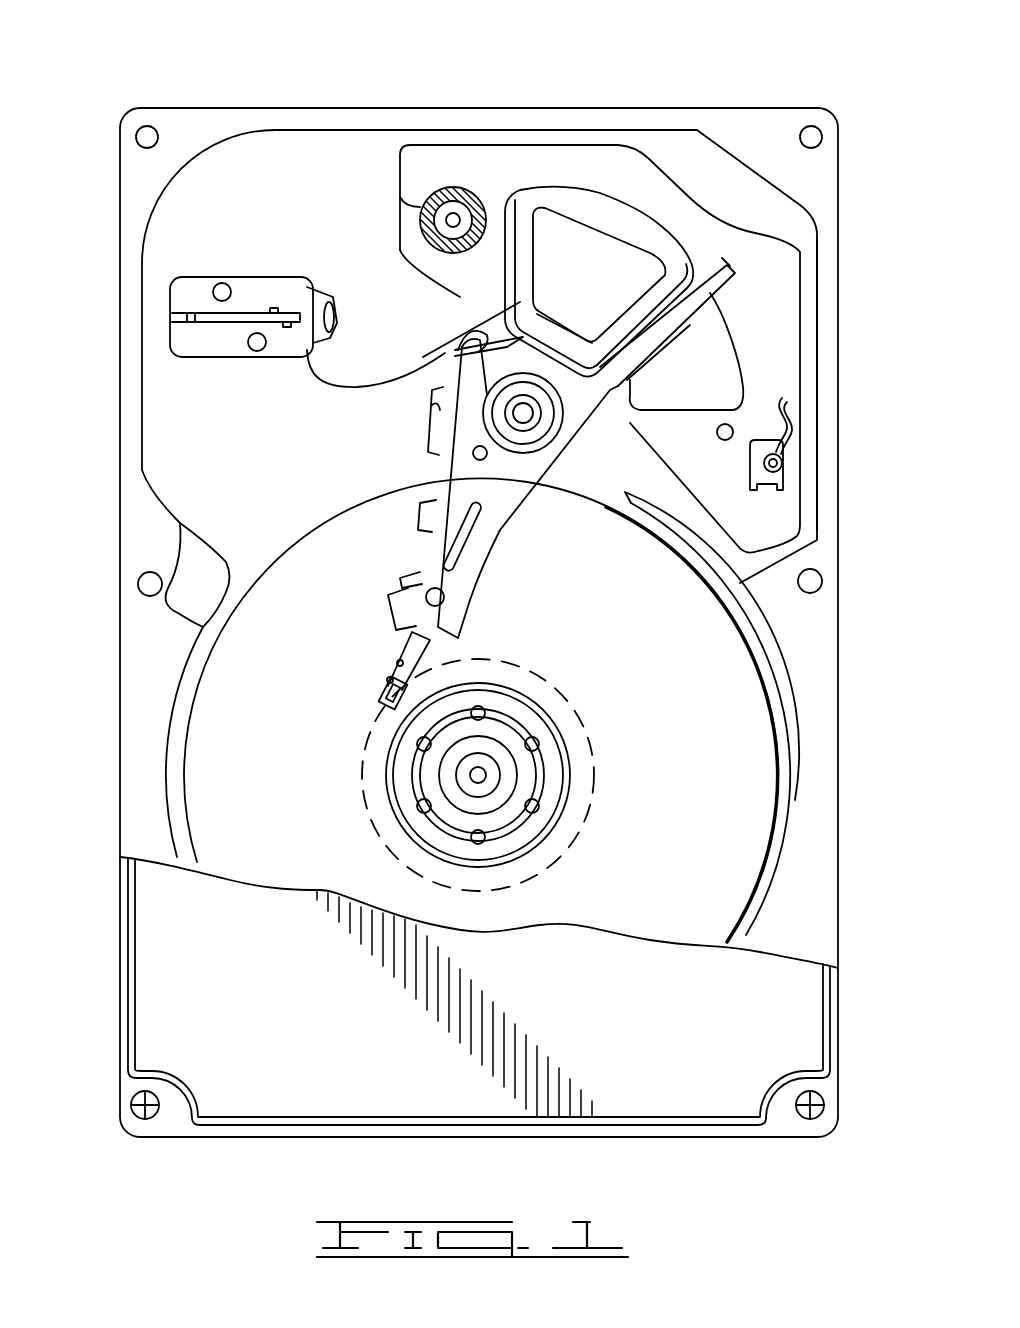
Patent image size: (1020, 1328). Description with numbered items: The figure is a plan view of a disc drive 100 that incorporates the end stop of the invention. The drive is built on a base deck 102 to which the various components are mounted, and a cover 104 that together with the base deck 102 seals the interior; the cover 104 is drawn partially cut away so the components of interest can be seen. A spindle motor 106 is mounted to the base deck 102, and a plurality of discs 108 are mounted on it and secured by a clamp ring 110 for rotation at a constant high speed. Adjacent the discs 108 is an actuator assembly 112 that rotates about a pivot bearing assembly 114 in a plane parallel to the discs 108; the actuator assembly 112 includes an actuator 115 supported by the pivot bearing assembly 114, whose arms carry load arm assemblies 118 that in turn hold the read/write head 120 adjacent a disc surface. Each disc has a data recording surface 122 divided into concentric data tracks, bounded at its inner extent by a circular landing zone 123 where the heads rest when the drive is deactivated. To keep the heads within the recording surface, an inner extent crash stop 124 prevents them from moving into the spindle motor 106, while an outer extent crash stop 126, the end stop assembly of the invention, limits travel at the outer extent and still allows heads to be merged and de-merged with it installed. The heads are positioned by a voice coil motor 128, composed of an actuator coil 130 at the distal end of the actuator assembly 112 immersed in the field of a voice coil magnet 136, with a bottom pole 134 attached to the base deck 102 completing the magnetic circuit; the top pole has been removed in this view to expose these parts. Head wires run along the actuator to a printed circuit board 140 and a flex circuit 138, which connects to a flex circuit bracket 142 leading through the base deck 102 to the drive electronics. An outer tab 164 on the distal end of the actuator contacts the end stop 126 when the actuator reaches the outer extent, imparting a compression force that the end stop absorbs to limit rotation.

The disc drive 100 is at (230, 70).
The base deck 102 is at (312, 165).
The cover 104 is at (172, 930).
The spindle motor 106 is at (492, 776).
The discs 108 is at (755, 790).
The clamp ring 110 is at (507, 735).
The actuator assembly 112 is at (510, 532).
The pivot bearing assembly 114 is at (533, 437).
The actuator 115 is at (443, 585).
The load arm assemblies 118 is at (402, 640).
The read/write head 120 is at (380, 690).
The data recording surface 122 is at (680, 888).
The landing zone 123 is at (360, 770).
The inner extent crash stop 124 is at (445, 212).
The outer extent crash stop 126 is at (792, 478).
The voice coil motor 128 is at (612, 138).
The actuator coil 130 is at (515, 305).
The bottom pole 134 is at (783, 333).
The voice coil magnet 136 is at (693, 365).
The flex circuit 138 is at (355, 383).
The printed circuit board 140 is at (432, 405).
The flex circuit bracket 142 is at (178, 327).
The outer tab 164 is at (740, 258).